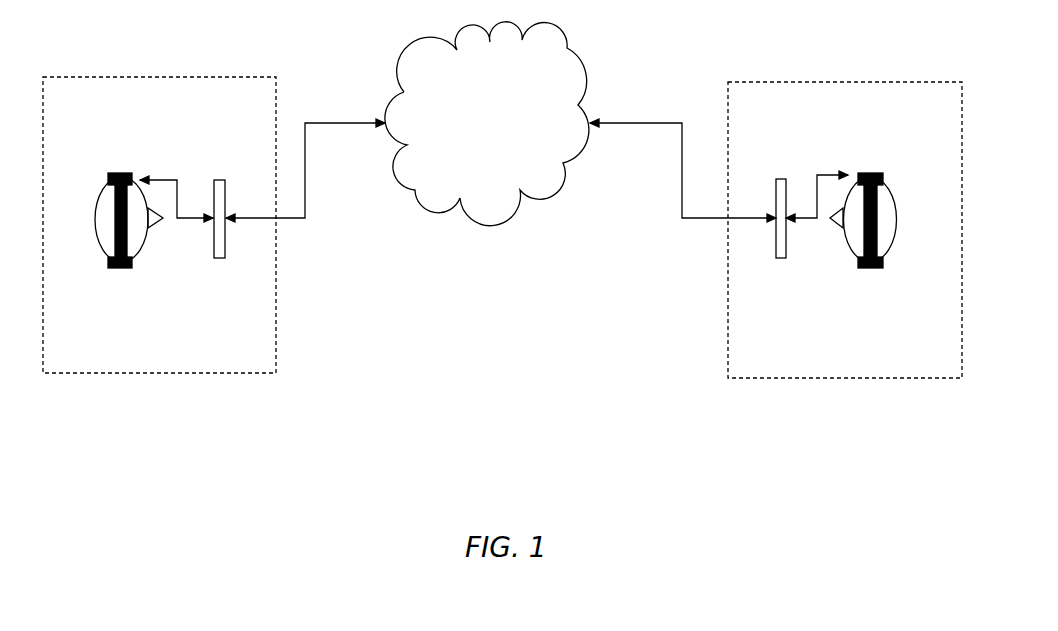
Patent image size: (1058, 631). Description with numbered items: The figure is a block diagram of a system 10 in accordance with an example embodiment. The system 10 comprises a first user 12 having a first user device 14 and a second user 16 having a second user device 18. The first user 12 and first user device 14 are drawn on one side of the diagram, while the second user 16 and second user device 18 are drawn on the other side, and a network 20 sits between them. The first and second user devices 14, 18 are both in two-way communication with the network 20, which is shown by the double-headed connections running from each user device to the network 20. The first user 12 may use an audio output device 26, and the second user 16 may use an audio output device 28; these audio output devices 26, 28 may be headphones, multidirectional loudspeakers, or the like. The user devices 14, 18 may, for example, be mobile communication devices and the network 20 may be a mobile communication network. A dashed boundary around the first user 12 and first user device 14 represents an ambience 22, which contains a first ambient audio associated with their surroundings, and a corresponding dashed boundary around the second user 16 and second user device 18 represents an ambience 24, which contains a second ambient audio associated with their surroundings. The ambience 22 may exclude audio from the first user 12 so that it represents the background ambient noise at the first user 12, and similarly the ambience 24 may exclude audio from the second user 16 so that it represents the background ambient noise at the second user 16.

The system 10 is at (716, 466).
The first user 12 is at (140, 257).
The first user device 14 is at (218, 258).
The second user 16 is at (850, 250).
The second user device 18 is at (779, 258).
The network 20 is at (492, 223).
The ambience 22 is at (278, 275).
The ambience 24 is at (725, 270).
The audio output device 26 is at (118, 270).
The audio output device 28 is at (875, 268).